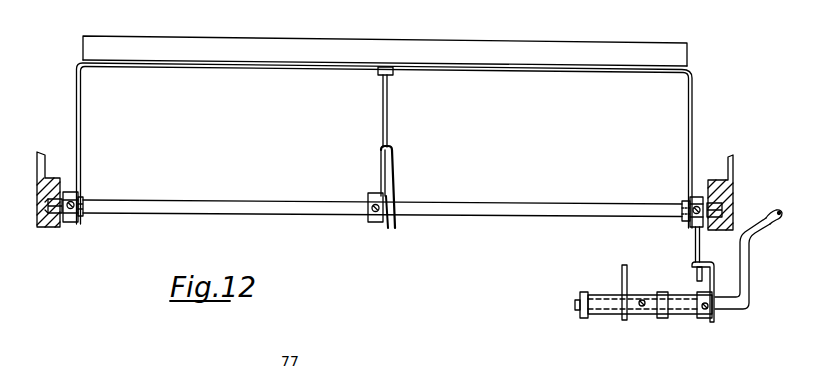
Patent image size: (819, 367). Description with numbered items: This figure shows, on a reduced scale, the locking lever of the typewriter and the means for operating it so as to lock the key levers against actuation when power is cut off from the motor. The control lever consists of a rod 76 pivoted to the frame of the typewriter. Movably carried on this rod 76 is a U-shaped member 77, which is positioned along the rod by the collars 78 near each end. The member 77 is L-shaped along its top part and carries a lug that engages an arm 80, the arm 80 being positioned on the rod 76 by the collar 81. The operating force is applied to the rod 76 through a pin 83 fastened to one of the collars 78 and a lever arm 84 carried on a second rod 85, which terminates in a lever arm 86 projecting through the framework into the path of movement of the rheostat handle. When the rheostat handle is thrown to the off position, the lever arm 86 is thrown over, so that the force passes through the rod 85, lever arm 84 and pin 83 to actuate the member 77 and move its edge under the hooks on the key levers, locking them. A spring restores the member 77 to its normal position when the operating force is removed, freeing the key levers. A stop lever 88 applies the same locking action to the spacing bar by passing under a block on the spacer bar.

The rod 76 is at (147, 208).
The U-shaped member 77 is at (125, 67).
The collars 78 is at (71, 191).
The arm 80 is at (388, 128).
The collar 81 is at (376, 222).
The pin 83 is at (694, 245).
The lever arm 84 is at (712, 285).
The rod 85 is at (730, 306).
The lever arm 86 is at (760, 232).
The stop lever 88 is at (622, 278).